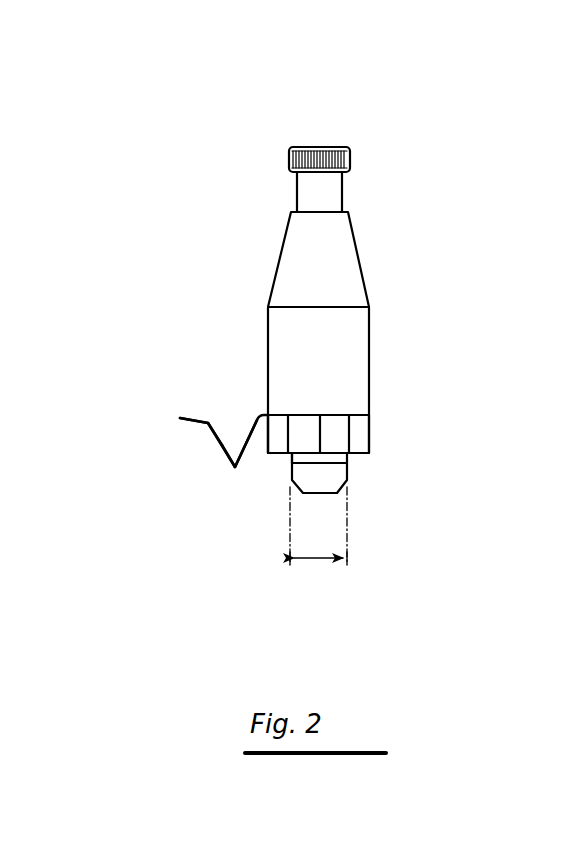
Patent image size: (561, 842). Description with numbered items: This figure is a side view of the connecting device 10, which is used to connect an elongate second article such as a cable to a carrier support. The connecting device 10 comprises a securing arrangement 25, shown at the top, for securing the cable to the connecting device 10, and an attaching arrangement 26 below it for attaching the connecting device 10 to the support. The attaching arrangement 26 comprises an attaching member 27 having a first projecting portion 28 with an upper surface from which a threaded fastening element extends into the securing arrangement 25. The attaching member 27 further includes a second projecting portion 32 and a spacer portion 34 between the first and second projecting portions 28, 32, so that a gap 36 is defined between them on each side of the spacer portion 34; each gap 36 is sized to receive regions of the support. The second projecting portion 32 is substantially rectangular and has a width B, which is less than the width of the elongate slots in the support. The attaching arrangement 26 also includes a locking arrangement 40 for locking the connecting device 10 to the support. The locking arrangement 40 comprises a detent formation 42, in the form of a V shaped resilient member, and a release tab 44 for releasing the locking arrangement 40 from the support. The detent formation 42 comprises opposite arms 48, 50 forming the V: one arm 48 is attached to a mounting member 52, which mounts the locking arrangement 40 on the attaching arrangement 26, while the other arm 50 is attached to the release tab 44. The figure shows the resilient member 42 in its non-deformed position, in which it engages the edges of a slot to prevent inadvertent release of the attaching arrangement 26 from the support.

The connecting device 10 is at (383, 213).
The securing arrangement 25 is at (367, 277).
The attaching arrangement 26 is at (373, 445).
The attaching member 27 is at (373, 422).
The first projecting portion 28 is at (263, 450).
The second projecting portion 32 is at (323, 483).
The spacer portion 34 is at (290, 462).
The gap 36 is at (342, 465).
The locking arrangement 40 is at (195, 418).
The detent formation 42 is at (218, 455).
The release tab 44 is at (182, 418).
The arm 48 is at (243, 420).
The arm 50 is at (210, 430).
The mounting member 52 is at (327, 415).
The width of the second projecting portion B is at (318, 540).